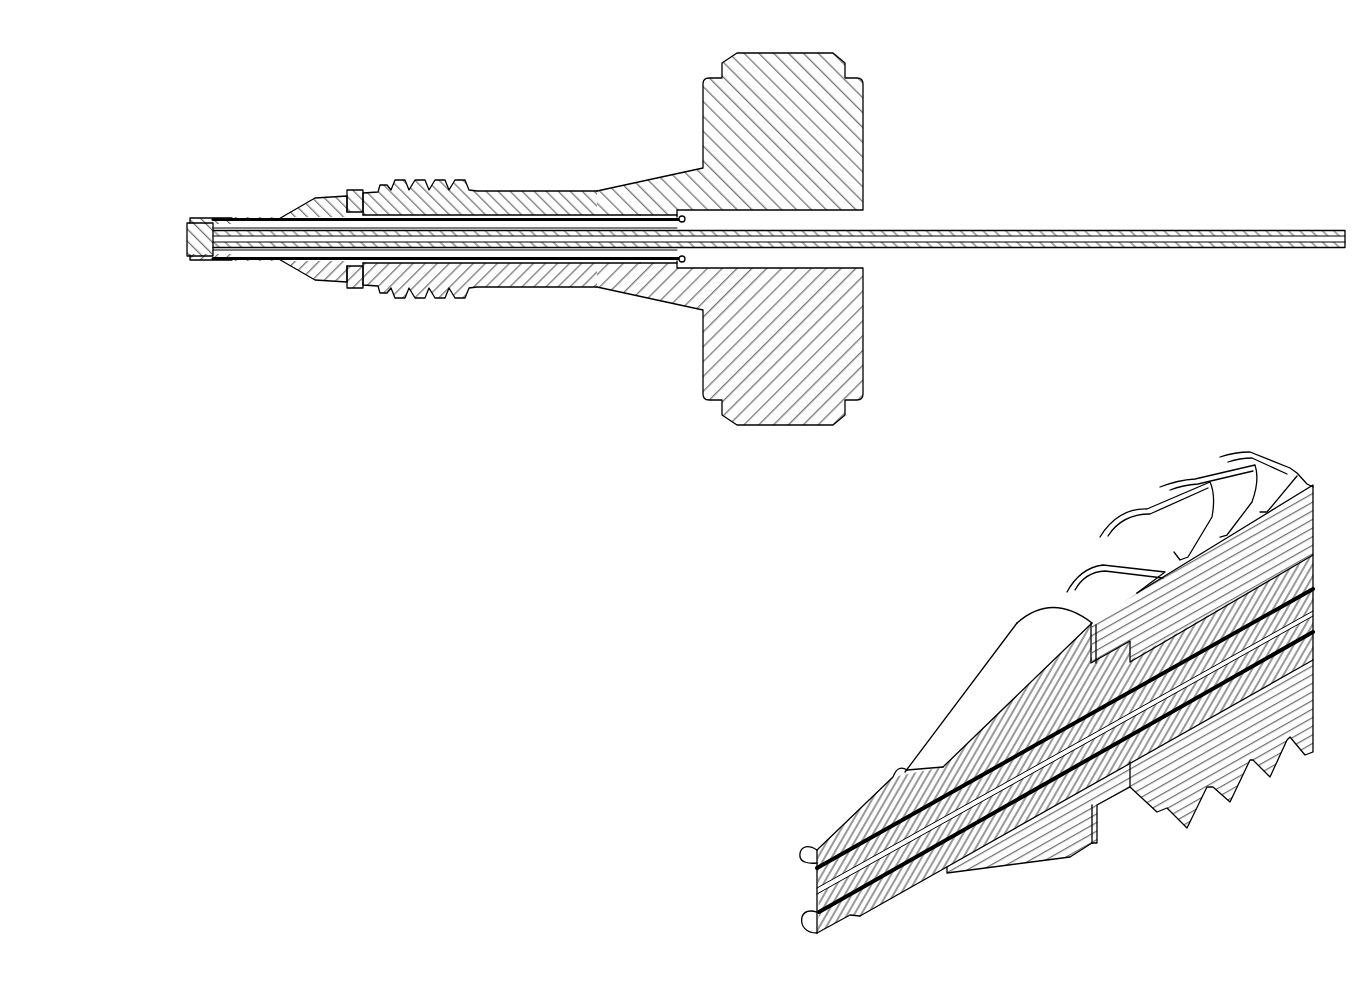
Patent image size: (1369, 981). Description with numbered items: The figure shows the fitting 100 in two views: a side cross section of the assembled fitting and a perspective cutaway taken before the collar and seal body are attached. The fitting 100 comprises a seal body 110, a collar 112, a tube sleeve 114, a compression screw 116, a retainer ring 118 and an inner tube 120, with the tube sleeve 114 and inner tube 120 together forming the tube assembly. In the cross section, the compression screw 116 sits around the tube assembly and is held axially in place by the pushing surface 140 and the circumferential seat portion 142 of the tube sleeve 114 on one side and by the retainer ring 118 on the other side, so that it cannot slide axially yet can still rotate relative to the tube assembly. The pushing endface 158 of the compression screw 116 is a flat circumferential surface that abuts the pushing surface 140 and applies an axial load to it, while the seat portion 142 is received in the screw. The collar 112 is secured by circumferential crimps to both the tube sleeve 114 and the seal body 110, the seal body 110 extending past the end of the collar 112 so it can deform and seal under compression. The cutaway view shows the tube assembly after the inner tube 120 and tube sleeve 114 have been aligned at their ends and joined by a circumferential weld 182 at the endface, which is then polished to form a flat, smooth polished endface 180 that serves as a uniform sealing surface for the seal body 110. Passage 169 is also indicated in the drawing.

In FIG. 6, the fitting 100 is at (225, 99).
In FIG. 7, the fitting 100 is at (1052, 511).
In FIG. 6, the seal body 110 is at (187, 238).
In FIG. 6, the collar 112 is at (201, 218).
In FIG. 6, the tube sleeve 114 is at (307, 208).
In FIG. 7, the tube sleeve 114 is at (1037, 682).
In FIG. 6, the compression screw 116 is at (635, 183).
In FIG. 7, the compression screw 116 is at (1193, 570).
In FIG. 6, the retainer ring 118 is at (682, 216).
In FIG. 6, the inner tube 120 is at (1047, 230).
In FIG. 6, the pushing surface 140 is at (354, 196).
In FIG. 6, the circumferential seat portion 142 is at (361, 200).
In FIG. 6, the pushing endface 158 is at (447, 239).
In FIG. 6, the bore 169 is at (648, 264).
In FIG. 7, the polished endface 180 is at (800, 845).
In FIG. 7, the weld 182 is at (812, 853).